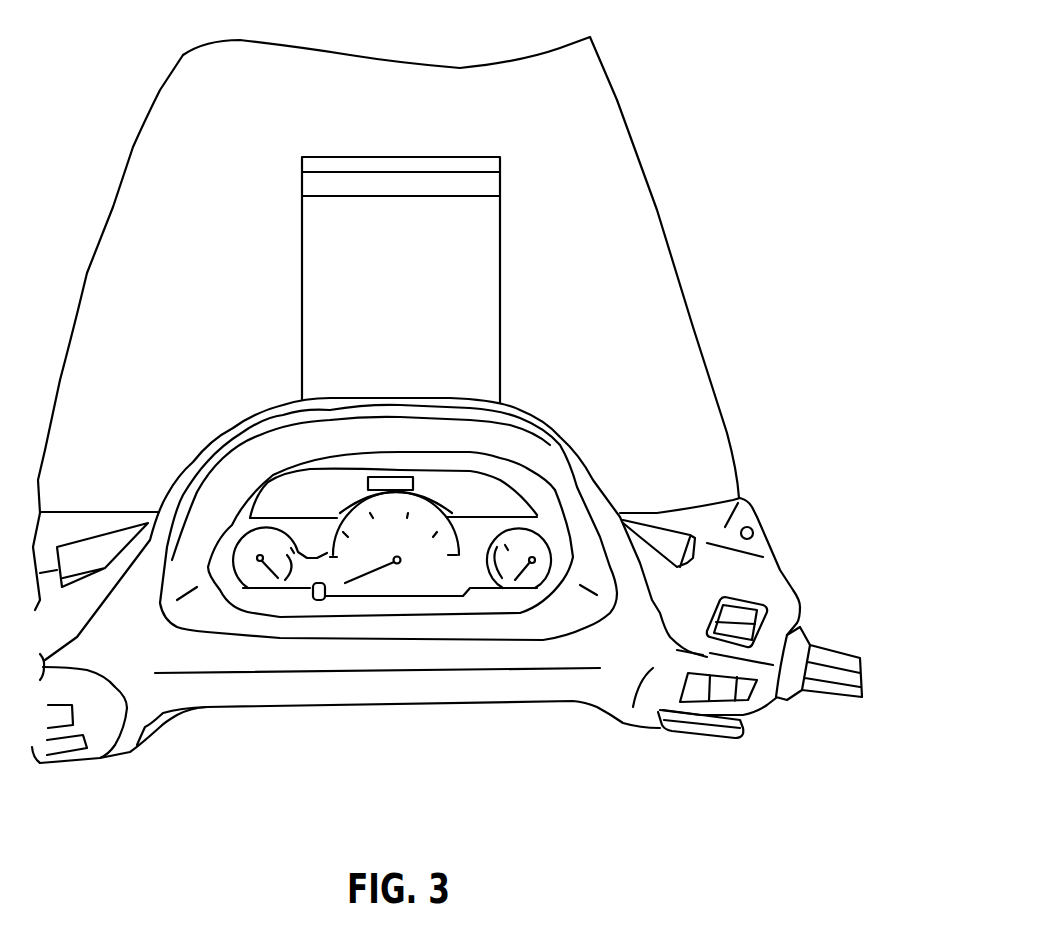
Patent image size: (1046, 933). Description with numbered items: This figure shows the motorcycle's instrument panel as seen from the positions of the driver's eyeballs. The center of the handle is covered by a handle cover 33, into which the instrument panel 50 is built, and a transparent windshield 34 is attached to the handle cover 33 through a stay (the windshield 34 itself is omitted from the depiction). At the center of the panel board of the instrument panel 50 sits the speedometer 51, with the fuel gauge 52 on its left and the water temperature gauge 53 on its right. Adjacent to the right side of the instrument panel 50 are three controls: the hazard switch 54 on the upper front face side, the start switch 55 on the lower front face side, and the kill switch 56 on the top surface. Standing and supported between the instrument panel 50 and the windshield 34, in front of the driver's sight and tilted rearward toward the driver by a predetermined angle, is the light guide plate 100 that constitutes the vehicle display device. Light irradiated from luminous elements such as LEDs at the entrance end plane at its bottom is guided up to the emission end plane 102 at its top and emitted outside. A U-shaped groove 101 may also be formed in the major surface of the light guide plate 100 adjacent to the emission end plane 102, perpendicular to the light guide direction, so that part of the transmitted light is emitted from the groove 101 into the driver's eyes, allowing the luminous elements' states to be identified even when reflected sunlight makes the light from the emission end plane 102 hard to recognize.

The handle cover 33 is at (186, 460).
The windshield 34 is at (590, 102).
The instrument panel 50 is at (477, 452).
The speedometer 51 is at (390, 513).
The fuel gauge 52 is at (262, 545).
The water temperature gauge 53 is at (520, 537).
The hazard switch 54 is at (750, 690).
The start switch 55 is at (713, 733).
The kill switch 56 is at (747, 607).
The light guide plate 100 is at (511, 306).
The U-shaped groove 101 is at (477, 200).
The emission end plane 102 is at (474, 165).